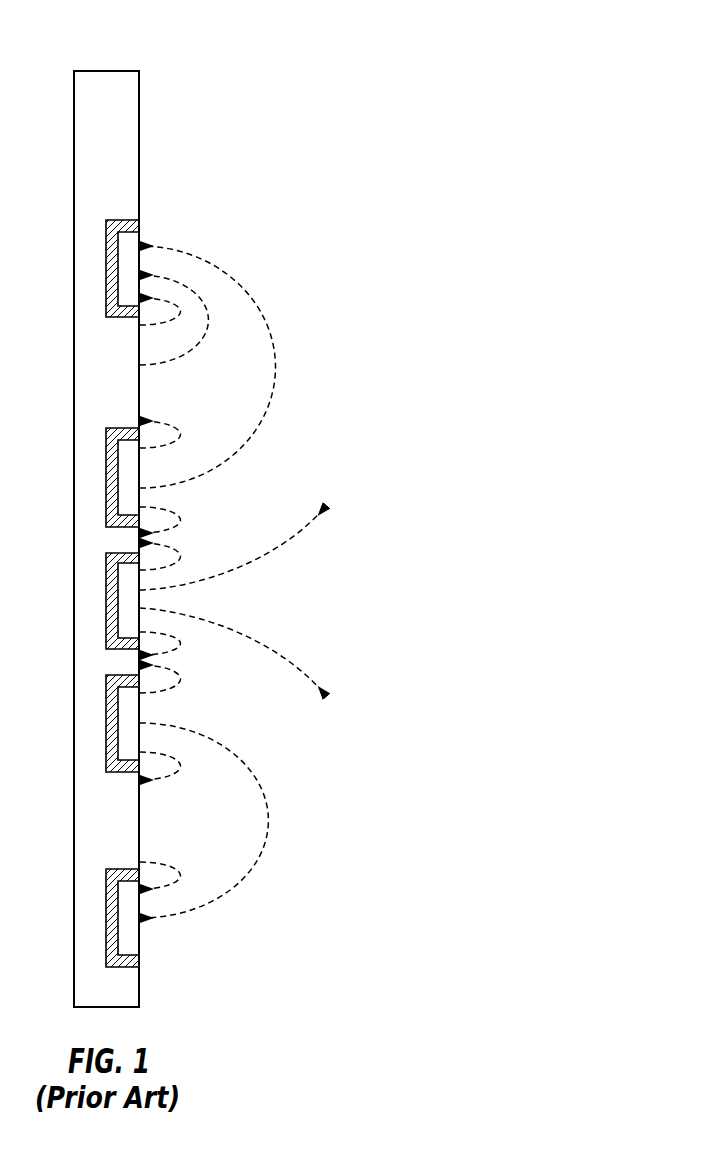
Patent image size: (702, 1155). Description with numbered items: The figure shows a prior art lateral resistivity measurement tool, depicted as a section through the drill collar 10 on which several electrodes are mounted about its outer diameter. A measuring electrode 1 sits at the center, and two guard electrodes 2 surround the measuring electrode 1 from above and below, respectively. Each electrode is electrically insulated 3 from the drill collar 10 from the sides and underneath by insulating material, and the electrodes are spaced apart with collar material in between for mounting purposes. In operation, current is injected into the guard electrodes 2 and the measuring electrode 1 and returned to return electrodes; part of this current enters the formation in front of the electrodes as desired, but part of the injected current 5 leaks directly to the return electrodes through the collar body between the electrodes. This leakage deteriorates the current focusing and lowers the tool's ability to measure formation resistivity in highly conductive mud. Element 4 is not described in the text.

The drill collar 10 is at (244, 42).
The measuring electrode 1 is at (128, 600).
The guard electrodes 2 is at (128, 478).
The electrical insulation 3 is at (106, 229).
The end elements 4 is at (128, 268).
The leaked injected current 5 is at (178, 560).